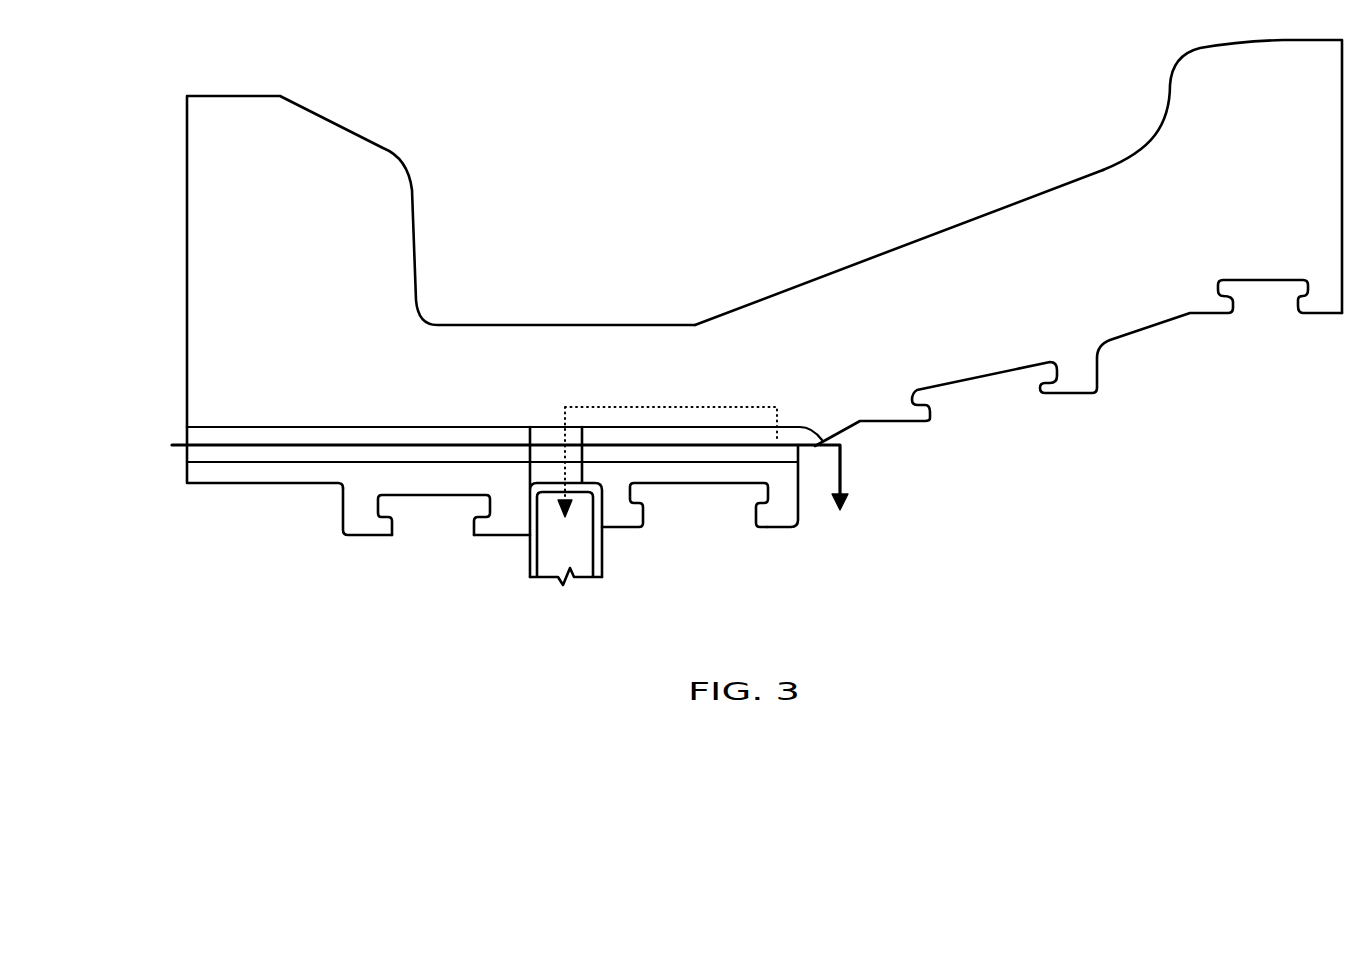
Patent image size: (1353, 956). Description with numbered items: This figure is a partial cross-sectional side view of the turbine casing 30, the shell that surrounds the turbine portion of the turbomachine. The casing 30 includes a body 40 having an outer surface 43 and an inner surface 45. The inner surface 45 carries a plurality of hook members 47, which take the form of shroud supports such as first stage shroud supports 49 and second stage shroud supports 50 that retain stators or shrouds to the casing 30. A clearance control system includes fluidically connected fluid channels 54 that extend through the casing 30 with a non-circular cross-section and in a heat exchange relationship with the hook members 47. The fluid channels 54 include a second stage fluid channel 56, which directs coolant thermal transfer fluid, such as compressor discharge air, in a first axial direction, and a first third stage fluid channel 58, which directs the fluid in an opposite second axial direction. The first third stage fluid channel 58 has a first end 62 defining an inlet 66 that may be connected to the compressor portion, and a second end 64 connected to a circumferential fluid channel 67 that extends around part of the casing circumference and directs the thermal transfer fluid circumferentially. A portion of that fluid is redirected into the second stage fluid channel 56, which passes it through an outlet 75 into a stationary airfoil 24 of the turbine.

The stationary airfoil 24 is at (543, 563).
The casing 30 is at (585, 210).
The body 40 is at (971, 213).
The outer surface 43 is at (1100, 170).
The inner surface 45 is at (232, 485).
The hook members 47 is at (677, 544).
The first stage shroud supports 49 is at (357, 517).
The second stage shroud supports 50 is at (775, 528).
The fluid channels 54 is at (163, 481).
The second stage fluid channel 56 is at (662, 383).
The first third stage fluid channel 58 is at (443, 484).
The first end 62 is at (200, 463).
The second end 64 is at (813, 440).
The inlet 66 is at (144, 443).
The circumferential fluid channel 67 is at (780, 415).
The outlet 75 is at (584, 470).